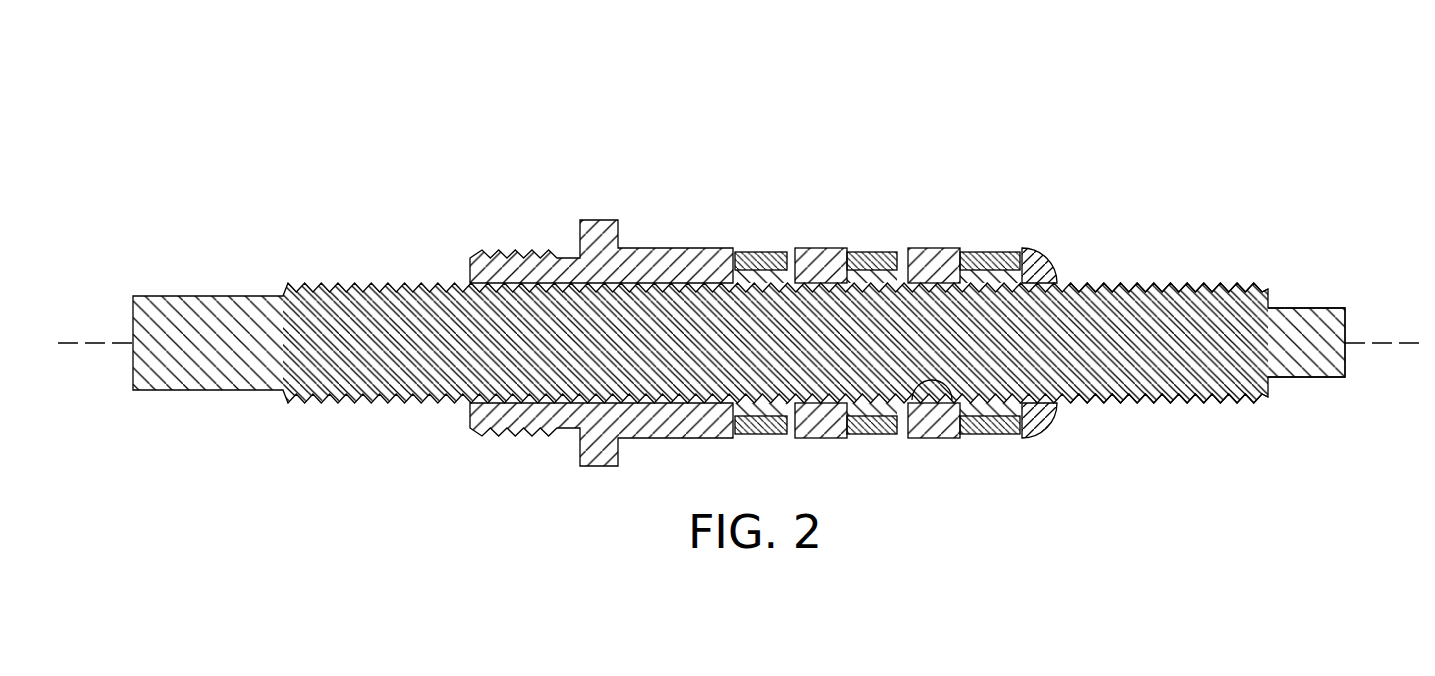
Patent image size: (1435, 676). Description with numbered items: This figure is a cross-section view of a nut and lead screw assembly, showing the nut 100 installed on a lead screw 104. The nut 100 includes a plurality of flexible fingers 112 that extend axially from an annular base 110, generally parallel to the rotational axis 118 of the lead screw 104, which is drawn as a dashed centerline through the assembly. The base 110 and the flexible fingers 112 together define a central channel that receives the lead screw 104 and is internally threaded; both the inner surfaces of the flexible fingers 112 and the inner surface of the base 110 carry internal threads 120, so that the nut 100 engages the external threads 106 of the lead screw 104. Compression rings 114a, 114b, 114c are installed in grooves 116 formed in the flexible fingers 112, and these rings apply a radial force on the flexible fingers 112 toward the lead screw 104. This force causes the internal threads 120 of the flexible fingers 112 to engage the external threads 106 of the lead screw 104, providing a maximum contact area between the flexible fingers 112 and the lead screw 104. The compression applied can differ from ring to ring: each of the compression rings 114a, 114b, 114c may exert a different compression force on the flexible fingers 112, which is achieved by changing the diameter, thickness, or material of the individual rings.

The nut 100 is at (331, 153).
The lead screw 104 is at (1312, 308).
The external threads 106 is at (1160, 283).
The annular base 110 is at (598, 220).
The flexible fingers 112 is at (1050, 262).
The compression ring 114a is at (776, 252).
The compression ring 114b is at (886, 252).
The compression ring 114c is at (1003, 252).
The grooves 116 is at (733, 250).
The rotational axis 118 is at (1387, 343).
The internal threads 120 is at (950, 398).